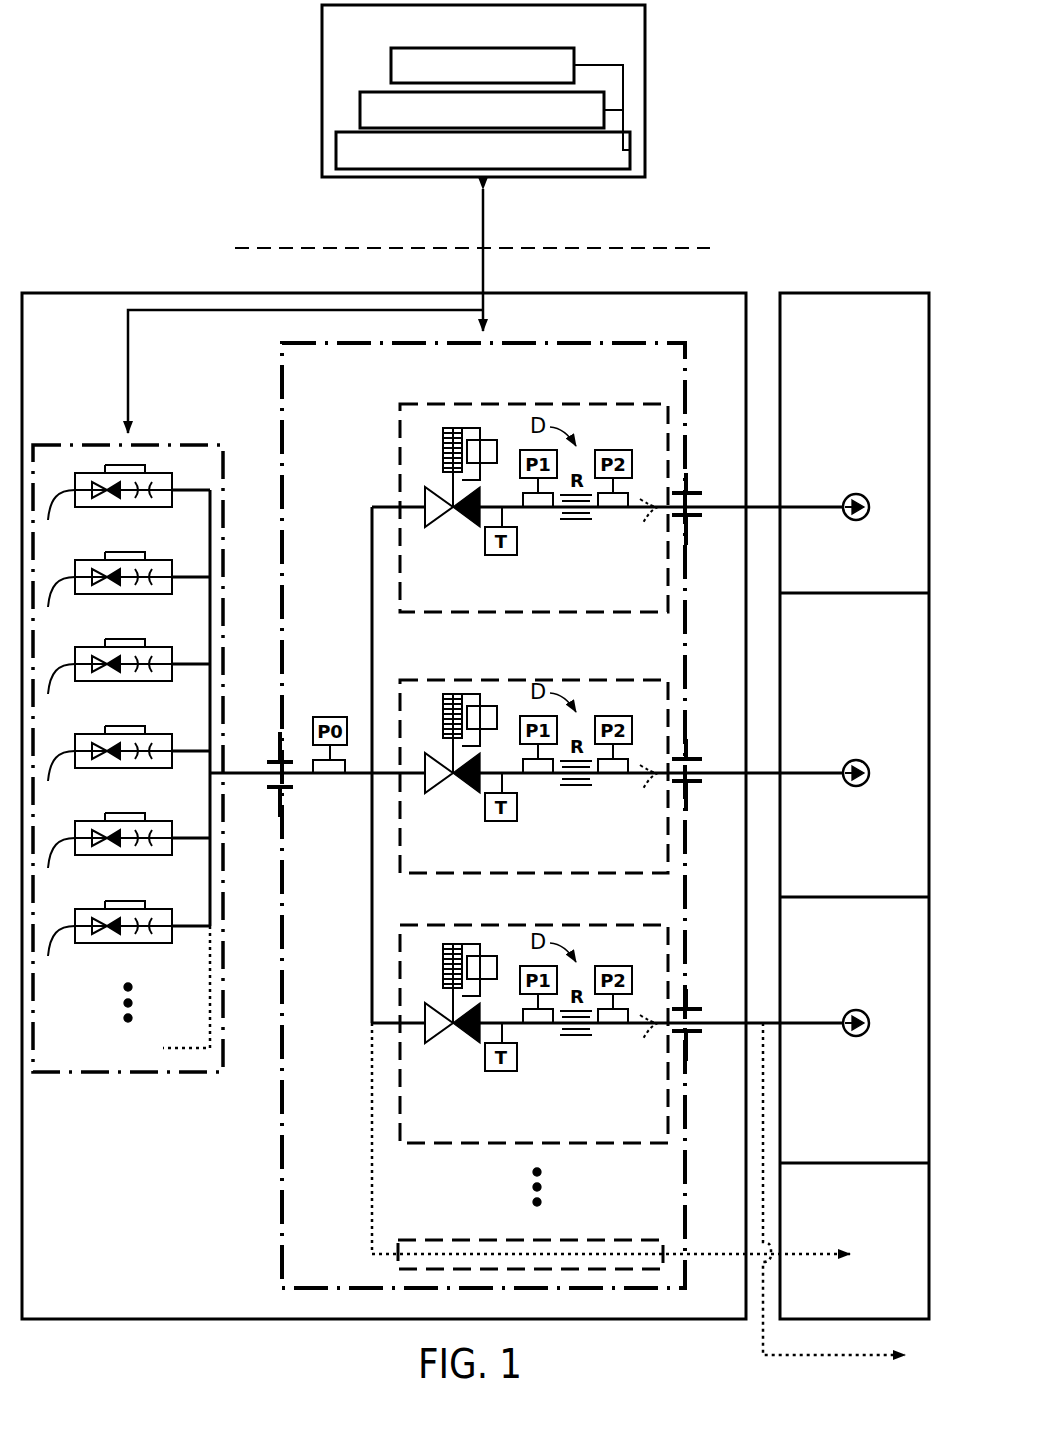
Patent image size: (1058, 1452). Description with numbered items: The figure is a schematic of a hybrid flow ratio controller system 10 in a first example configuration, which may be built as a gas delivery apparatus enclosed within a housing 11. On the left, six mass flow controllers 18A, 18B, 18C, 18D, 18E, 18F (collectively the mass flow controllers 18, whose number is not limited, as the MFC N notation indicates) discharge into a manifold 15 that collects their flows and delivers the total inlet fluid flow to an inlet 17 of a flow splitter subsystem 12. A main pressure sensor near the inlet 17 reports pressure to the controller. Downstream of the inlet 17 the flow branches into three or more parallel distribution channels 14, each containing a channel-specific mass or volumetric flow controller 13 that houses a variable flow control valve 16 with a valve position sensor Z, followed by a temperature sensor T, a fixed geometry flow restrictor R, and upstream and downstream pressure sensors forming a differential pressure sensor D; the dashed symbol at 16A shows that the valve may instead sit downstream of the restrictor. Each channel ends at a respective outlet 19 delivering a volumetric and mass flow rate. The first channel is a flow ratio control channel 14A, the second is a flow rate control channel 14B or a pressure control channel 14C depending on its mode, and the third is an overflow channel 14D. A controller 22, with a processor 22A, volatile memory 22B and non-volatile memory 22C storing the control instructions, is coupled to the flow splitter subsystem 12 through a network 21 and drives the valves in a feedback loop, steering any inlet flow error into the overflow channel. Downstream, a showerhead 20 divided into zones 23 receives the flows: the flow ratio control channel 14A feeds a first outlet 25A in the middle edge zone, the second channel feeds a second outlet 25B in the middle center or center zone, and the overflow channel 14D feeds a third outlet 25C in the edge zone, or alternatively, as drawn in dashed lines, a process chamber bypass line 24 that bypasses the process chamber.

The hybrid flow ratio controller system 10 is at (150, 38).
The housing 11 is at (101, 292).
The flow splitter subsystem 12 is at (483, 815).
The channel-specific mass or volumetric flow controller 13 is at (432, 476).
The distribution channels 14 is at (660, 384).
The flow ratio control channel 14A is at (628, 403).
The flow rate control channel 14B is at (637, 680).
The pressure control channel 14C is at (534, 776).
The overflow channel 14D is at (622, 925).
The manifold 15 is at (214, 536).
The variable flow control valve 16 is at (474, 522).
The alternative valve position downstream of the flow restrictor 16A is at (630, 780).
The inlet 17 is at (276, 760).
The mass flow controllers 18 is at (95, 440).
The mass flow controller 18A is at (123, 507).
The mass flow controller 18B is at (123, 594).
The mass flow controller 18C is at (123, 681).
The mass flow controller 18D is at (123, 768).
The mass flow controller 18E is at (123, 855).
The mass flow controller 18F is at (123, 943).
The outlet 19 is at (697, 493).
The showerhead 20 is at (850, 292).
The network 21 is at (612, 246).
The controller 22 is at (483, 91).
The processor 22A is at (482, 65).
The volatile memory 22B is at (482, 110).
The non-volatile memory 22C is at (483, 150).
The zones 23 is at (800, 305).
The process chamber bypass line 24 is at (852, 1353).
The first outlet 25A is at (870, 509).
The second outlet 25B is at (870, 775).
The third outlet 25C is at (870, 1025).